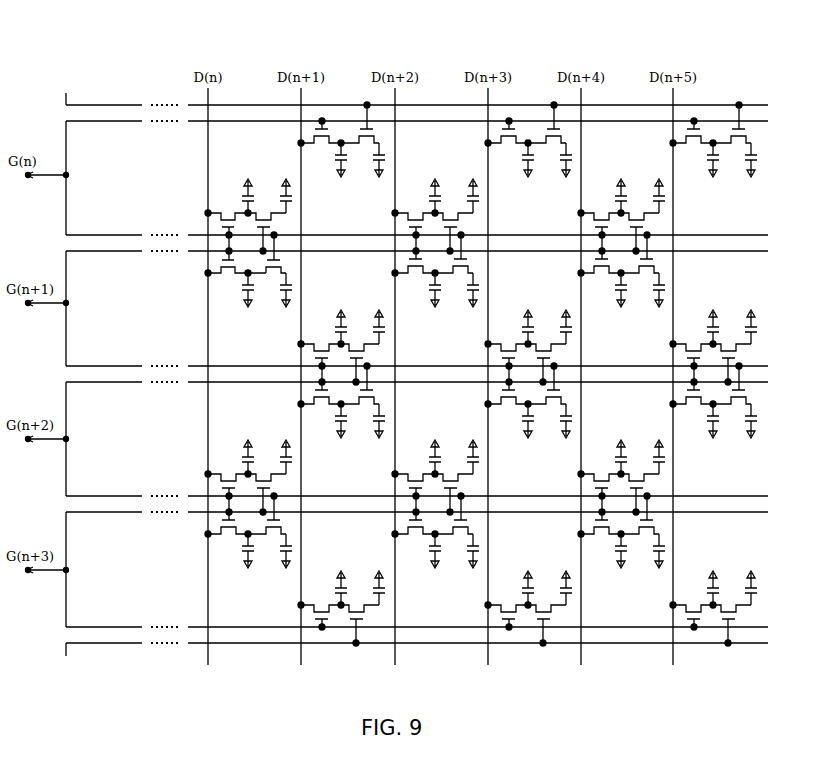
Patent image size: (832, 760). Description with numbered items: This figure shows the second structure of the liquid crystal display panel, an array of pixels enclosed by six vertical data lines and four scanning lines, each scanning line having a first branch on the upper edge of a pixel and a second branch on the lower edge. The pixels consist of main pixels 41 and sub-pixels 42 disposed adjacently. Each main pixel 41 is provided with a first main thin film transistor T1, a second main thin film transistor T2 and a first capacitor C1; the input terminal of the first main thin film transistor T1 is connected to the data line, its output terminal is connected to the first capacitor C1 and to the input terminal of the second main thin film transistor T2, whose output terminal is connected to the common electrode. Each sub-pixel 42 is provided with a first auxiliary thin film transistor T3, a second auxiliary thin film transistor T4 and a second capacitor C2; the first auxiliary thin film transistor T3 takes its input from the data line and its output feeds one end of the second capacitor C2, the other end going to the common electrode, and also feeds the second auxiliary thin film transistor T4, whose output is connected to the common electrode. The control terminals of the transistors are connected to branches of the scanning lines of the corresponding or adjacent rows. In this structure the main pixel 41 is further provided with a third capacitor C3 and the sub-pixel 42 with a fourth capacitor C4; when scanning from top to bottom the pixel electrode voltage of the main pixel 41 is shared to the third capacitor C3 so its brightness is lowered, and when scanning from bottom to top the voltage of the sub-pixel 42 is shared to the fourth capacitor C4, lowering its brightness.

The main pixel 41 is at (208, 177).
The sub-pixel 42 is at (182, 158).
The first main thin film transistor T1 is at (226, 215).
The second main thin film transistor T2 is at (265, 223).
The first auxiliary thin film transistor T3 is at (235, 273).
The second auxiliary thin film transistor T4 is at (271, 265).
The first capacitor C1 is at (243, 196).
The second capacitor C2 is at (243, 290).
The third capacitor C3 is at (282, 196).
The fourth capacitor C4 is at (282, 290).